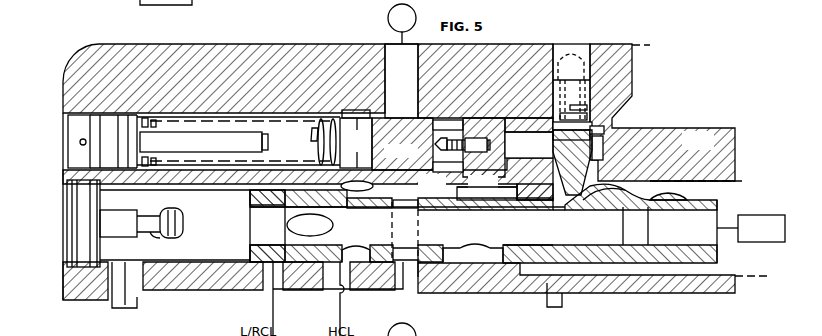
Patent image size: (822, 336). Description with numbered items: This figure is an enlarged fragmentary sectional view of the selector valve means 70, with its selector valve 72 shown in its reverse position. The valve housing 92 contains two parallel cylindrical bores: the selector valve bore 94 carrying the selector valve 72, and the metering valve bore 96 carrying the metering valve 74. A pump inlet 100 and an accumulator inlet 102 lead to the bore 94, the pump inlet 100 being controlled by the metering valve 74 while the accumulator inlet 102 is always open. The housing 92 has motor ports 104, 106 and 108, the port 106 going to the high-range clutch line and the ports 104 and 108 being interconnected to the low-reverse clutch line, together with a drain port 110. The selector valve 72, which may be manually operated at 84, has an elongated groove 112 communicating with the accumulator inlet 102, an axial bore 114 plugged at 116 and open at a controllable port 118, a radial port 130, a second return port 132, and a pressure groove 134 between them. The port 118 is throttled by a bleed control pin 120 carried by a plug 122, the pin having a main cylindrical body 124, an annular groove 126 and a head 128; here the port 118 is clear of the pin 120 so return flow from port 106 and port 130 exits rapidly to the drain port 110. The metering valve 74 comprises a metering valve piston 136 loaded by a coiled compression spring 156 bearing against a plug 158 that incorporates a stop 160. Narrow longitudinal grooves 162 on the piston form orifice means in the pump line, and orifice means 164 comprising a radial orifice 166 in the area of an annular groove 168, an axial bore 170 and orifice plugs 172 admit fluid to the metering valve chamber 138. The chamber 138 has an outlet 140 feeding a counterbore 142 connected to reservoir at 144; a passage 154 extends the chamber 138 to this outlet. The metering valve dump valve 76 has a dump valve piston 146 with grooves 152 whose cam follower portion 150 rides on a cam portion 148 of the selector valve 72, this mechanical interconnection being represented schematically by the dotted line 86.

The selector valve means 70 is at (82, 43).
The valve housing 92 is at (252, 48).
The pump inlet 100 is at (397, 53).
The plug 158 is at (68, 132).
The stop 160 is at (230, 136).
The coiled compression spring 156 is at (311, 136).
The metering valve bore 96 is at (312, 117).
The metering valve piston 136 is at (352, 110).
The accumulator inlet 102 is at (356, 143).
The longitudinal grooves 162 is at (398, 118).
The radial orifice 166 is at (434, 146).
The metering valve 74 is at (448, 120).
The axial bore 170 is at (477, 118).
The orifice means 164 is at (462, 151).
The orifice plugs 172 is at (446, 179).
The metering valve chamber 138 is at (525, 119).
The annular groove 168 is at (458, 170).
The metering valve dump valve 76 is at (593, 97).
The dump valve piston 146 is at (600, 125).
The passage 154 is at (603, 138).
The outlet 140 is at (604, 148).
The cam portion 148 is at (683, 170).
The cam follower portion 150 is at (565, 205).
The dotted line 86 is at (558, 200).
The selector valve 72 is at (718, 257).
The plug 116 is at (642, 239).
The manual control 84 is at (770, 215).
The radial port 130 is at (360, 243).
The pressure groove 134 is at (410, 208).
The second return port 132 is at (468, 243).
The elongated groove 112 is at (493, 200).
The axial bore 114 is at (560, 243).
The grooves 152 is at (620, 186).
The selector valve bore 94 is at (216, 193).
The controllable port 118 is at (260, 213).
The bleed control pin 120 is at (114, 214).
The main cylindrical body 124 is at (138, 214).
The head 128 is at (172, 210).
The annular groove 126 is at (152, 236).
The plug 122 is at (83, 200).
The drain port 110 is at (113, 283).
The motor port 104 is at (265, 283).
The motor port 106 is at (331, 281).
The motor port 108 is at (413, 280).
The reservoir connection 144 is at (563, 307).
The counterbore 142 is at (720, 280).